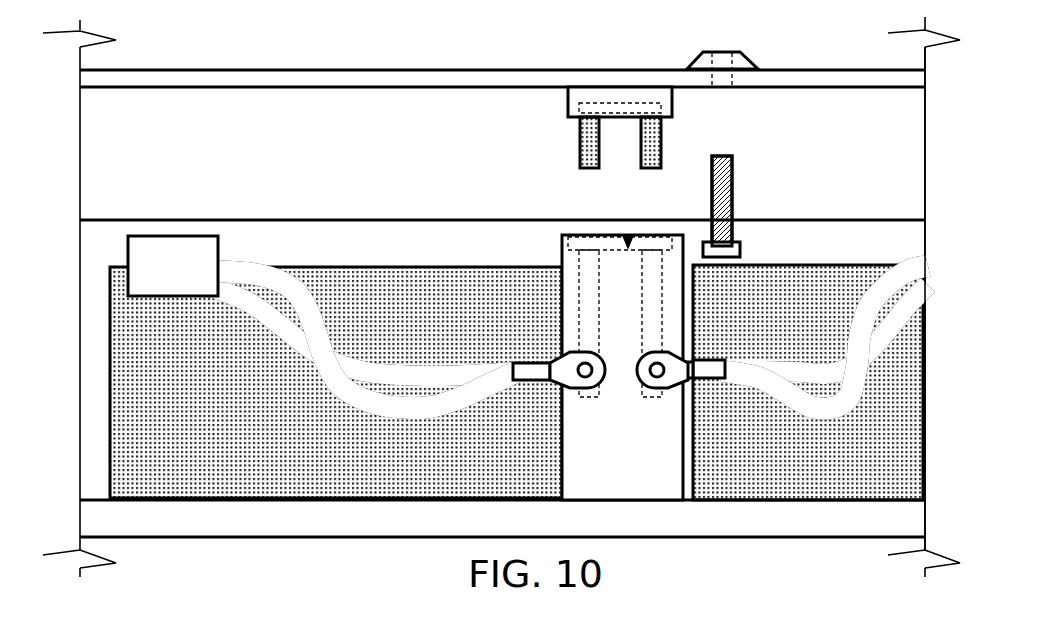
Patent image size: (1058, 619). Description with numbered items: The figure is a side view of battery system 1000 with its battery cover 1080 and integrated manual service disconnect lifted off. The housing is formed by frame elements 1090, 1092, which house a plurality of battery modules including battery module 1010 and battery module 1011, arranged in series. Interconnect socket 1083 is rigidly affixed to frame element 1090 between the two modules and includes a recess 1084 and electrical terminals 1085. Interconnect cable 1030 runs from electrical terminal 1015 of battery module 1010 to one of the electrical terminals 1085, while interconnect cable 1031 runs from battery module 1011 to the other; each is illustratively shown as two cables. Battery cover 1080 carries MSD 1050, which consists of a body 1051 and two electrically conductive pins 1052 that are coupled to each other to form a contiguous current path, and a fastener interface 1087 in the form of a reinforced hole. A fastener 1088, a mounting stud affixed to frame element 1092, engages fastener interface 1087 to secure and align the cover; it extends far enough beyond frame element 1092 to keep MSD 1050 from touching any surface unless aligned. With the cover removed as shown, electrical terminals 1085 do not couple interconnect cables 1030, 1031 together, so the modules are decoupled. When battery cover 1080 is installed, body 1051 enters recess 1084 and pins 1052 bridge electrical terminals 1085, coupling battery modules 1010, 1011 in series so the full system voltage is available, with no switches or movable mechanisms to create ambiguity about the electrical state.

The battery system 1000 is at (262, 52).
The battery cover 1080 is at (413, 69).
The fastener interface 1087 is at (745, 65).
The body 1051 is at (568, 105).
The electrically conductive pins 1052 is at (641, 145).
The MSD 1050 is at (646, 127).
The fastener 1088 is at (732, 202).
The interconnect cable 1031 is at (900, 253).
The interconnect cable 1030 is at (390, 358).
The electrical terminals 1085 is at (650, 322).
The recess 1084 is at (628, 238).
The frame element 1092 is at (328, 255).
The electrical terminal 1015 is at (200, 280).
The battery module 1010 is at (472, 321).
The battery module 1011 is at (807, 322).
The interconnect socket 1083 is at (650, 449).
The frame element 1090 is at (529, 530).